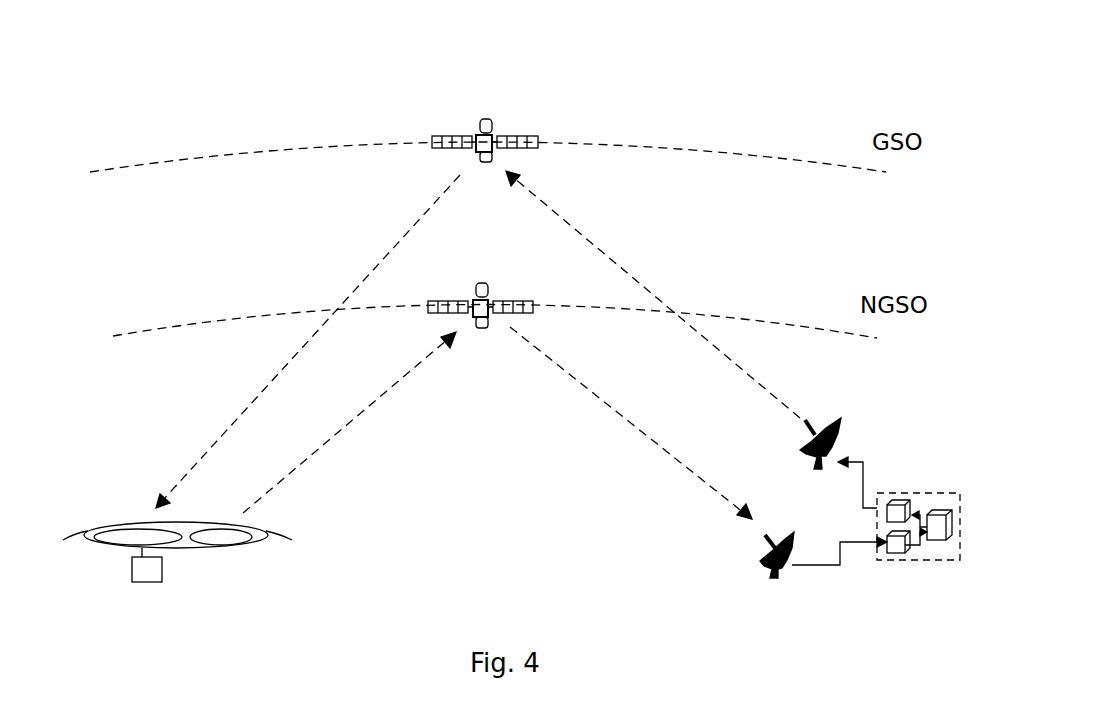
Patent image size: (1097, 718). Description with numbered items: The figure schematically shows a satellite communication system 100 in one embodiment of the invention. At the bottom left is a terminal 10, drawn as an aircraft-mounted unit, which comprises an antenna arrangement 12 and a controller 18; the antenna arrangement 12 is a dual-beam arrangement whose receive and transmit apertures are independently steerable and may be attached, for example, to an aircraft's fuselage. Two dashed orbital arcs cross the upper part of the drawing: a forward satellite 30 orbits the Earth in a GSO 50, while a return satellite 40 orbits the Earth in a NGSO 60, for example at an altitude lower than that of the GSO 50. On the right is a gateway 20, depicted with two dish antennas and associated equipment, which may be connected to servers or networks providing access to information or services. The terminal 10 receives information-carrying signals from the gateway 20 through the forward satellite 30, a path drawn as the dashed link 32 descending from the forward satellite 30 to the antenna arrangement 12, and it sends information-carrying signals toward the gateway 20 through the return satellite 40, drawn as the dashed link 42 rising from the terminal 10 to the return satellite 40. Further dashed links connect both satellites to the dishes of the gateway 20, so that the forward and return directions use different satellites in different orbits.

The satellite communication system 100 is at (803, 68).
The terminal 10 is at (167, 508).
The antenna arrangement 12 is at (86, 534).
The controller 18 is at (132, 568).
The gateway 20 is at (910, 395).
The forward satellite 30 is at (497, 133).
The GSO communication link 32 is at (373, 274).
The return satellite 40 is at (490, 297).
The NGSO communication link 42 is at (379, 398).
The GSO 50 is at (235, 151).
The NGSO 60 is at (225, 317).